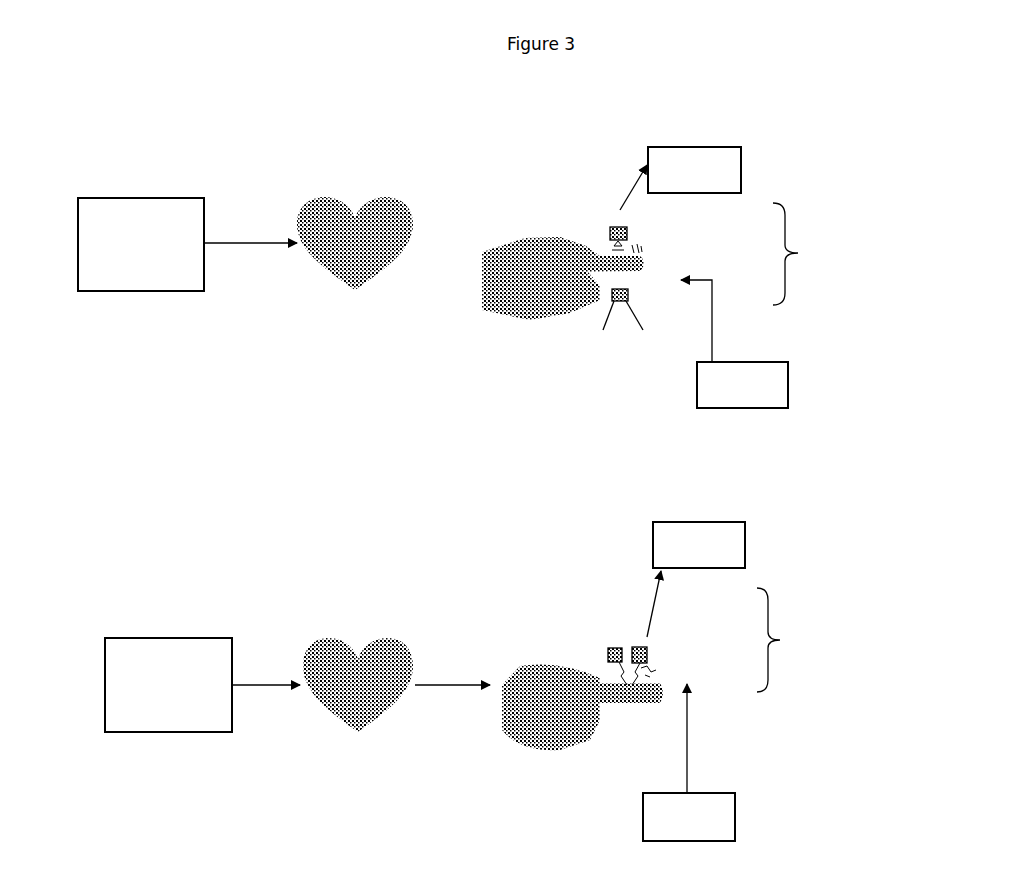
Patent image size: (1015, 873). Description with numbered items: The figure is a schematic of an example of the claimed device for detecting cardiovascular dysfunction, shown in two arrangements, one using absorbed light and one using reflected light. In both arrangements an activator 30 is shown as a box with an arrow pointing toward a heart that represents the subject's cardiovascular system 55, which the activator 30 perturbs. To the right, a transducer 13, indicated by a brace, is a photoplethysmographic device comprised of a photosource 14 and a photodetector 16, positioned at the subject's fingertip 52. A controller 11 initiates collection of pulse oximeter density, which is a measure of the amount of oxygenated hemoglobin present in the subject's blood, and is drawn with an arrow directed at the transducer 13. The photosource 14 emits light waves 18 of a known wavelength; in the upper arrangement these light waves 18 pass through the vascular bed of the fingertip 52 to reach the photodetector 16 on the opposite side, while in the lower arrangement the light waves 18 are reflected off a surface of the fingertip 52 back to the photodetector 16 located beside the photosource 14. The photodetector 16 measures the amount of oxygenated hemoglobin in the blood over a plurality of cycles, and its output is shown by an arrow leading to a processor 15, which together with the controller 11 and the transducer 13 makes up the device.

The activator 30 is at (155, 465).
The cardiovascular system 55 is at (365, 187).
The processor 15 is at (682, 392).
The photodetector 16 is at (627, 227).
The fingertip 52 is at (598, 270).
The photosource 14 is at (616, 301).
The light waves 18 is at (628, 300).
The controller 11 is at (715, 560).
The transducer 13 is at (806, 447).